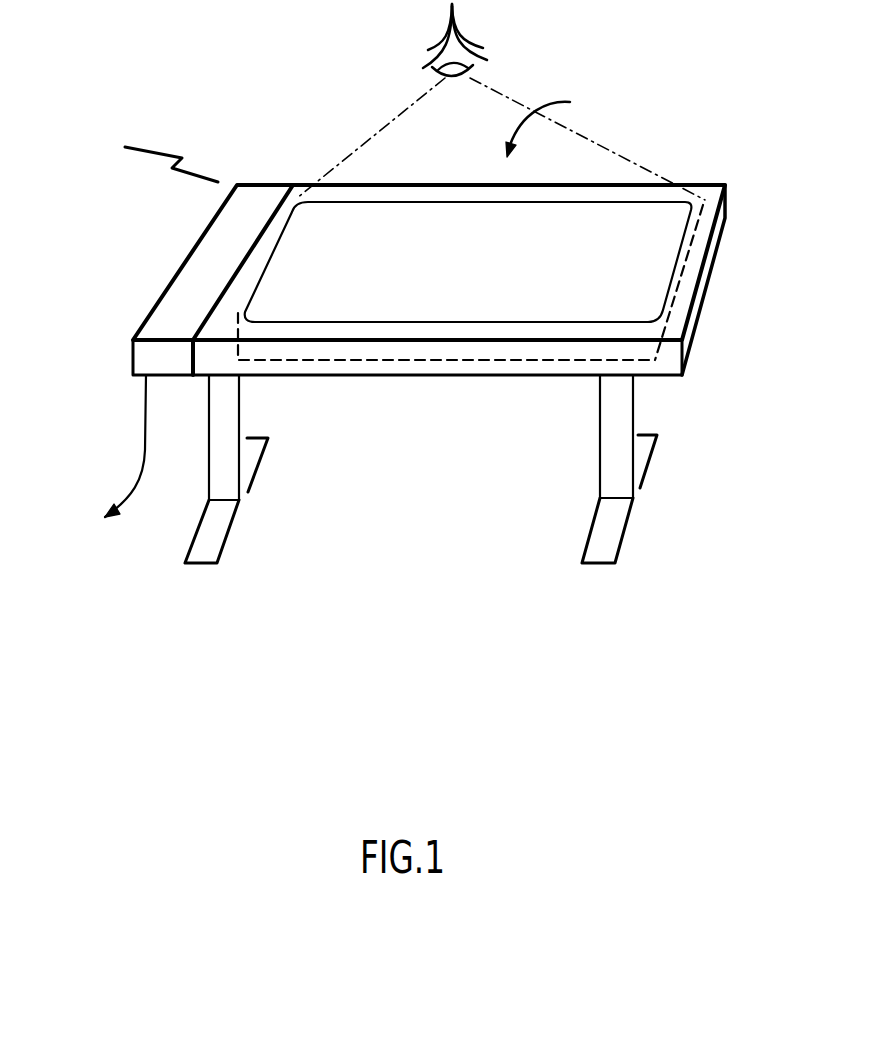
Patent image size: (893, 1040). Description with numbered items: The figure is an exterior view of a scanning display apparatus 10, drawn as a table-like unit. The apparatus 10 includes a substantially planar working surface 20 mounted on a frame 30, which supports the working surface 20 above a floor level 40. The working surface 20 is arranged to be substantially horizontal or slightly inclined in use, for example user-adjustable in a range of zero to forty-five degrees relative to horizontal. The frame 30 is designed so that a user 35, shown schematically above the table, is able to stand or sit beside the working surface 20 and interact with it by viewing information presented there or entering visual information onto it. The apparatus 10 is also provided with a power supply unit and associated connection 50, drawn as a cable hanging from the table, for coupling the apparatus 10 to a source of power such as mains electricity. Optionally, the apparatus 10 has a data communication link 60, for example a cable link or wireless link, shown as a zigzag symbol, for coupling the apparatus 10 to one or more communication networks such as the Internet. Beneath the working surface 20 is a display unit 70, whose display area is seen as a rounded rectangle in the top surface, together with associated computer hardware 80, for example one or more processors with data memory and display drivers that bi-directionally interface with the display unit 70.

The scanning display apparatus 10 is at (558, 123).
The working surface 20 is at (358, 195).
The frame 30 is at (223, 445).
The user 35 is at (452, 53).
The floor level 40 is at (420, 526).
The power supply unit and associated connection 50 is at (143, 457).
The data communication link 60 is at (158, 152).
The display unit 70 is at (382, 266).
The computer hardware 80 is at (192, 277).